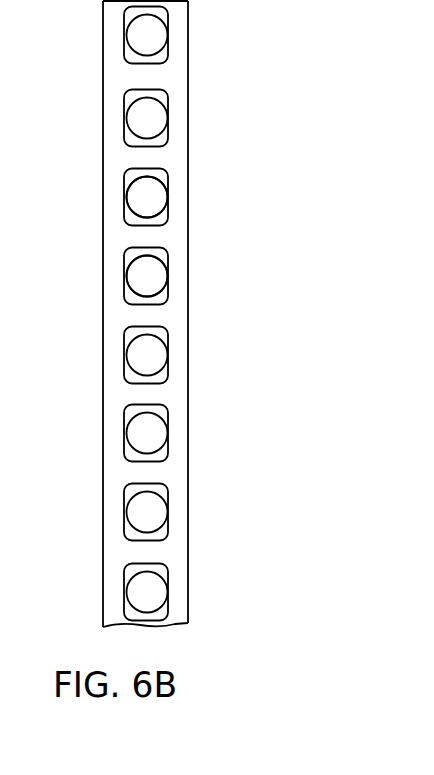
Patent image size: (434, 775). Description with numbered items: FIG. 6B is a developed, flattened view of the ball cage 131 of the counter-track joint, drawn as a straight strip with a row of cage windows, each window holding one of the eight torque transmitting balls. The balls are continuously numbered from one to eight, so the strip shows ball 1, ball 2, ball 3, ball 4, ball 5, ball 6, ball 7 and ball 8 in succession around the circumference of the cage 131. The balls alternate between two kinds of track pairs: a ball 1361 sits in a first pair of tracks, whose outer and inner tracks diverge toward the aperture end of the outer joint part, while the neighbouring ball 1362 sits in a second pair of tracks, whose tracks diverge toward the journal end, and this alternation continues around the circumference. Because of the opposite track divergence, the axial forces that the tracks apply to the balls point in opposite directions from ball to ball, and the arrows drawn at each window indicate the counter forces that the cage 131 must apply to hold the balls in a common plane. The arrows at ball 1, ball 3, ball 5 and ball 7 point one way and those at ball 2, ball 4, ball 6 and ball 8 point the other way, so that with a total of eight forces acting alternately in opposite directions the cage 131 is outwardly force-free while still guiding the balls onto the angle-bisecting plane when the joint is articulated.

The ball 1 is at (124, 35).
The ball 2 is at (197, 118).
The ball 3 is at (124, 197).
The ball 4 is at (197, 276).
The ball 5 is at (124, 355).
The ball 6 is at (197, 433).
The ball 7 is at (124, 512).
The ball 8 is at (197, 592).
The ball cage 131 is at (176, 62).
The torque transmitting ball 1361 is at (152, 197).
The torque transmitting ball 1362 is at (148, 270).